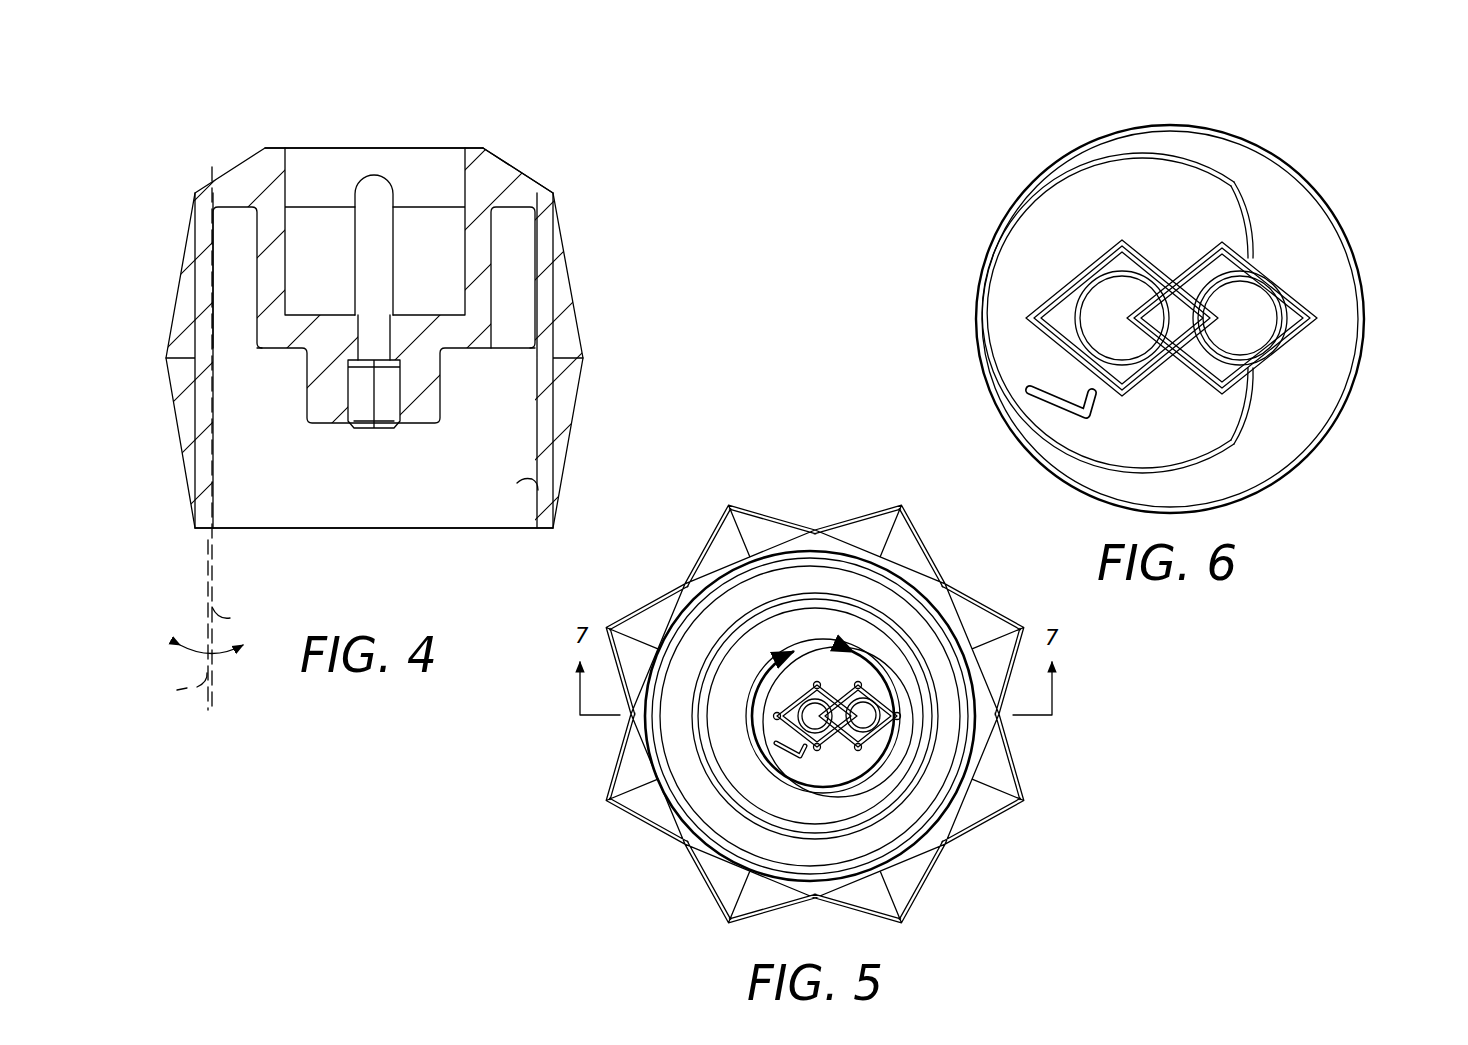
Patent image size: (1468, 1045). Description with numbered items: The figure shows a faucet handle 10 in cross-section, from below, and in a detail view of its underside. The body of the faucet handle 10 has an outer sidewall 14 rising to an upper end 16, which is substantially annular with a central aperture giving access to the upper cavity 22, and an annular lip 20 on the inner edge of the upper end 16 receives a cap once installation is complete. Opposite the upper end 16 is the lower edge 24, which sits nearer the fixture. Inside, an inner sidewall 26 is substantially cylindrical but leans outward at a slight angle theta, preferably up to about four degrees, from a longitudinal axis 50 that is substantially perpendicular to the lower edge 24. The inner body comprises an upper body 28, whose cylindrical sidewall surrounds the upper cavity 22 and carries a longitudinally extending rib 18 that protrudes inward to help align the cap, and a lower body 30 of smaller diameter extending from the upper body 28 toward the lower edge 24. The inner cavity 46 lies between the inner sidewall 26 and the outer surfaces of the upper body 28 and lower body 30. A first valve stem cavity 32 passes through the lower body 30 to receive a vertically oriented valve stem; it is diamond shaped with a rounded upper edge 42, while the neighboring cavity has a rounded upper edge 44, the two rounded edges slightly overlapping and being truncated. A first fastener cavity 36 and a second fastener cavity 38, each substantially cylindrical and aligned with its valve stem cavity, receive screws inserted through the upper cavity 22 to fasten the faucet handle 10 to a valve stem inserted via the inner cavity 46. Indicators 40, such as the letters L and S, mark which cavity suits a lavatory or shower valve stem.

In FIG. 4, the faucet handle 10 is at (213, 143).
In FIG. 5, the faucet handle 10 is at (798, 485).
In FIG. 4, the outer sidewall 14 is at (568, 320).
In FIG. 5, the outer sidewall 14 is at (630, 762).
In FIG. 4, the upper end 16 is at (533, 177).
In FIG. 4, the rib 18 is at (373, 180).
In FIG. 4, the annular lip 20 is at (457, 147).
In FIG. 4, the upper cavity 22 is at (323, 190).
In FIG. 4, the lower edge 24 is at (393, 529).
In FIG. 5, the lower edge 24 is at (912, 858).
In FIG. 4, the inner sidewall 26 is at (517, 483).
In FIG. 5, the inner sidewall 26 is at (838, 570).
In FIG. 4, the upper body 28 is at (267, 268).
In FIG. 5, the upper body 28 is at (875, 618).
In FIG. 6, the upper body 28 is at (1199, 145).
In FIG. 4, the lower body 30 is at (434, 401).
In FIG. 5, the lower body 30 is at (802, 668).
In FIG. 6, the lower body 30 is at (1105, 193).
In FIG. 4, the first valve stem cavity 32 is at (357, 390).
In FIG. 4, the first fastener cavity 36 is at (378, 318).
In FIG. 5, the first fastener cavity 36 is at (815, 717).
In FIG. 6, the first fastener cavity 36 is at (1124, 315).
In FIG. 5, the second fastener cavity 38 is at (868, 717).
In FIG. 6, the second fastener cavity 38 is at (1246, 315).
In FIG. 6, the indicator 40 is at (1308, 246).
In FIG. 6, the rounded upper edge 42 is at (1052, 338).
In FIG. 6, the rounded upper edge 44 is at (1294, 338).
In FIG. 4, the inner cavity 46 is at (246, 444).
In FIG. 4, the longitudinal axis 50 is at (238, 612).